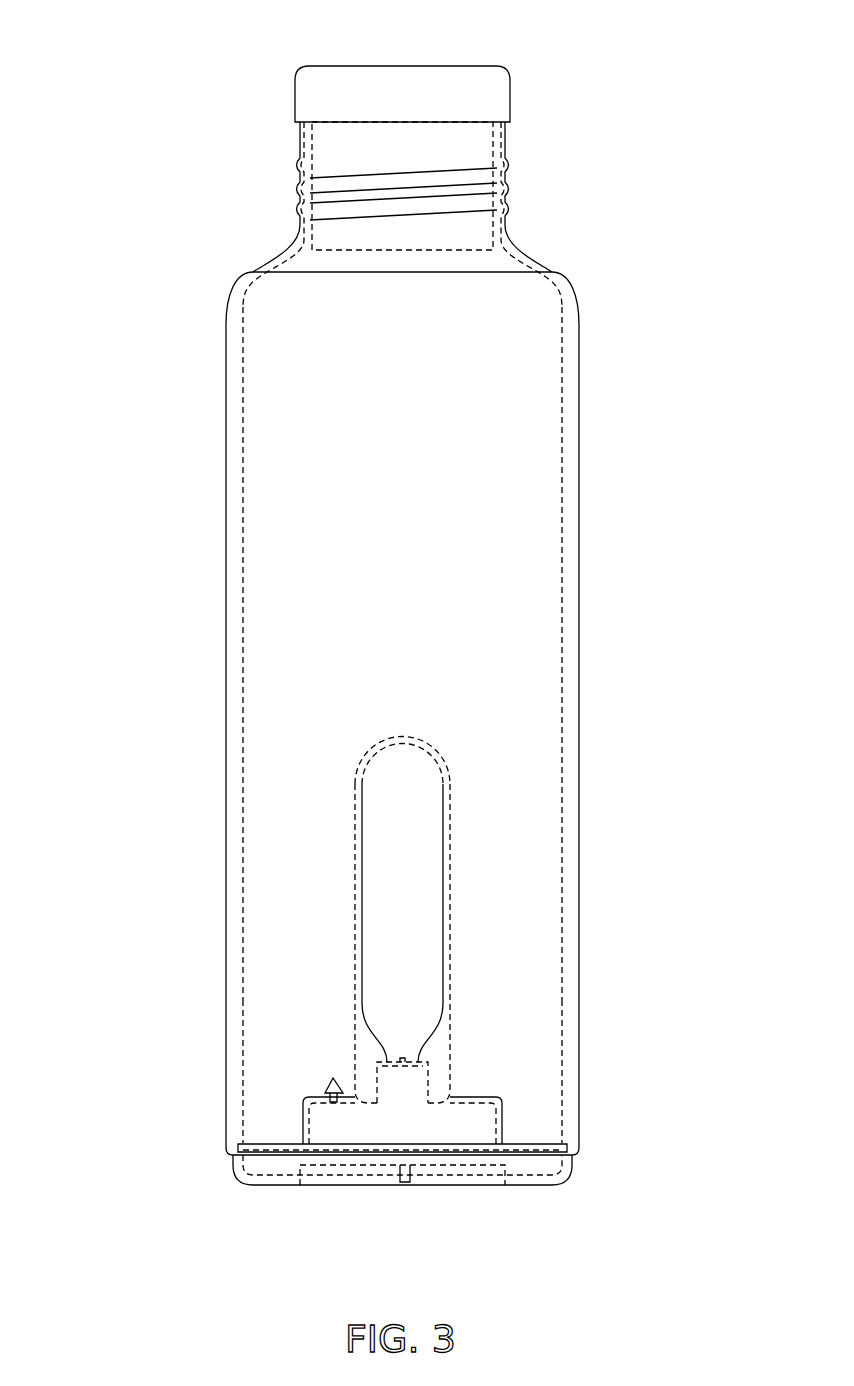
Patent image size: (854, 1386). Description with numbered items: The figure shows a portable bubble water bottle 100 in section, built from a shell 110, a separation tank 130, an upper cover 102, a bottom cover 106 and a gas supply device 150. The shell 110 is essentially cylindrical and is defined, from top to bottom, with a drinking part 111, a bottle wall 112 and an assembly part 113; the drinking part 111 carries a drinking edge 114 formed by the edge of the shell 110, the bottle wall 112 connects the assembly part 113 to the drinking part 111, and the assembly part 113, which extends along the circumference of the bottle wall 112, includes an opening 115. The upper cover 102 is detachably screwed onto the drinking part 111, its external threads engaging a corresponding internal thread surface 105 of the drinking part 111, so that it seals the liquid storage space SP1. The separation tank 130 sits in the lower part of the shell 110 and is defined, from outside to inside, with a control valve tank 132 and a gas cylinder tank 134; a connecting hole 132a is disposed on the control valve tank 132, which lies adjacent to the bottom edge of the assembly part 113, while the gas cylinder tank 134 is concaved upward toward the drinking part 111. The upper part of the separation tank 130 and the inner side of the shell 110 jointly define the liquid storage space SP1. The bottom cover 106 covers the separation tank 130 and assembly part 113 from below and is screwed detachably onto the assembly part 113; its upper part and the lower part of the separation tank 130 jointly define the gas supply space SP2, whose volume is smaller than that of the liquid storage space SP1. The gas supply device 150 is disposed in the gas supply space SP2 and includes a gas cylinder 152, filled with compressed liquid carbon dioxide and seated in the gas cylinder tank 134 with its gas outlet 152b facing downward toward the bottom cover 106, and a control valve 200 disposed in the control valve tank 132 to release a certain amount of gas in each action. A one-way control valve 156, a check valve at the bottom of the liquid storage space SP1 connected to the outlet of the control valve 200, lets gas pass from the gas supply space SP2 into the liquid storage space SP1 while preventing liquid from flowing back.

The portable bubble water bottle 100 is at (603, 70).
The upper cover 102 is at (295, 120).
The internal thread surface 105 is at (300, 218).
The bottom cover 106 is at (332, 1182).
The shell 110 is at (575, 372).
The drinking part 111 is at (300, 156).
The bottle wall 112 is at (230, 400).
The assembly part 113 is at (225, 1097).
The drinking edge 114 is at (510, 118).
The opening 115 is at (242, 1135).
The separation tank 130 is at (435, 1090).
The control valve tank 132 is at (498, 1125).
The connecting hole 132a is at (305, 1098).
The gas cylinder tank 134 is at (450, 1070).
The gas supply device 150 is at (397, 1002).
The gas cylinder 152 is at (450, 915).
The gas outlet 152b is at (412, 1082).
The one-way control valve 156 is at (333, 1078).
The control valve 200 is at (480, 1137).
The liquid storage space SP1 is at (335, 705).
The gas supply space SP2 is at (437, 1035).